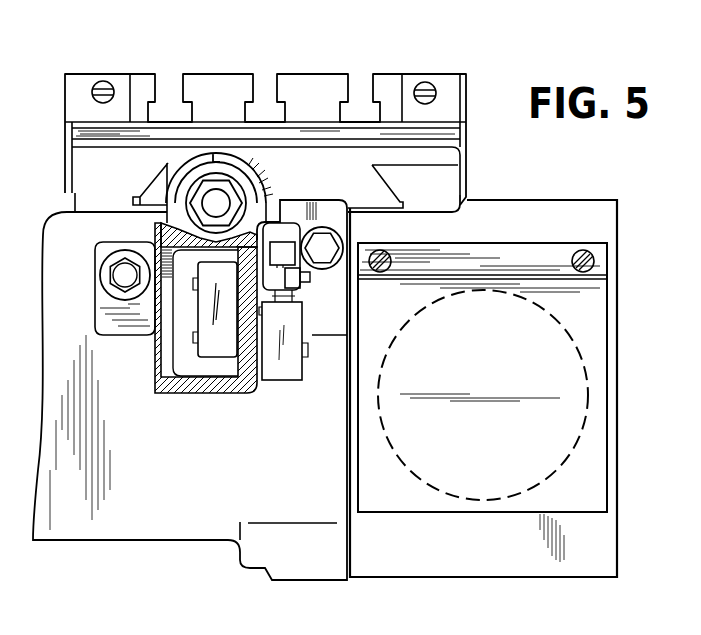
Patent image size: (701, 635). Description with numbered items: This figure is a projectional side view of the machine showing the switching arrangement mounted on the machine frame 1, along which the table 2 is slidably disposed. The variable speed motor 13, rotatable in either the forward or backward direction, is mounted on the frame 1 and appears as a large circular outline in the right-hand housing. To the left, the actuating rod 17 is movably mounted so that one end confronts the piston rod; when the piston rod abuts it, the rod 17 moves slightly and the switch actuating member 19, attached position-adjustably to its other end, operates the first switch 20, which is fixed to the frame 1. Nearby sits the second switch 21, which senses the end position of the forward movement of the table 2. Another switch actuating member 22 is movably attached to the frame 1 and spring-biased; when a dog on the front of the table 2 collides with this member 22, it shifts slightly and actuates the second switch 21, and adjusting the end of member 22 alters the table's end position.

The machine frame 1 is at (62, 540).
The table 2 is at (314, 84).
The variable speed motor 13 is at (490, 500).
The actuating rod 17 is at (284, 245).
The switch actuating member 19 is at (302, 276).
The first switch 20 is at (282, 380).
The second switch 21 is at (213, 357).
The switch actuating member 22 is at (203, 203).